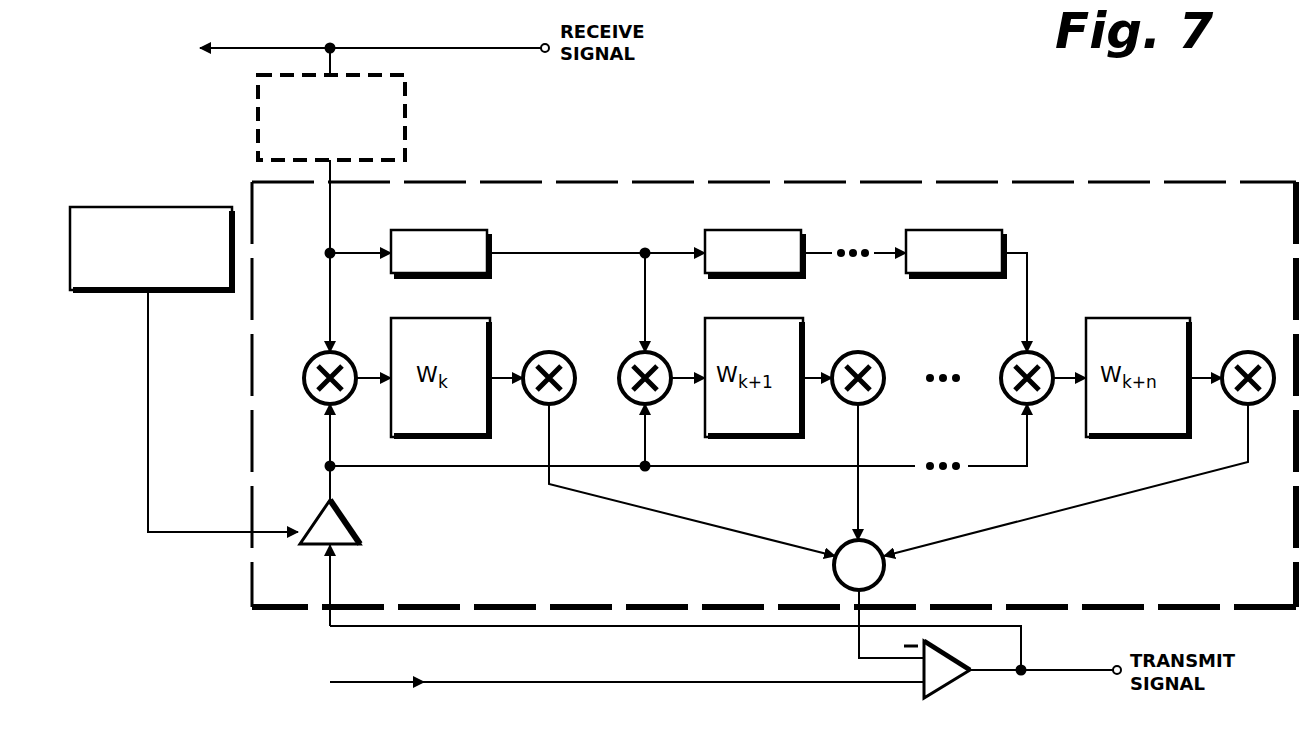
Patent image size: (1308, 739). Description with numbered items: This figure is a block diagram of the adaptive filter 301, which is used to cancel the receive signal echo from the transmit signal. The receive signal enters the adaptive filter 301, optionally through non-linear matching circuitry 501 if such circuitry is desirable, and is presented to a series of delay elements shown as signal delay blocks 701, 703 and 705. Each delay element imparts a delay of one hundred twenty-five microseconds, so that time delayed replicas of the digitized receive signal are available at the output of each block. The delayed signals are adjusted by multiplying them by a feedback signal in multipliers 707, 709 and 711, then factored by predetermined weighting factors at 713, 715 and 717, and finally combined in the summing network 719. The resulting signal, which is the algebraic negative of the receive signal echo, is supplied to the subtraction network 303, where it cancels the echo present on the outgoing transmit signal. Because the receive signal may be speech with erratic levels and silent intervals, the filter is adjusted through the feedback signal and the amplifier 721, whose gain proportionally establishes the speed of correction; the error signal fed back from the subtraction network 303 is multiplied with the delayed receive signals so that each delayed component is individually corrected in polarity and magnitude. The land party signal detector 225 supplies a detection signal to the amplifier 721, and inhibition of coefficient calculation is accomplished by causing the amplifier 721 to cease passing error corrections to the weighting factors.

The non-linear matching circuitry 501 is at (405, 92).
The land party signal detector 225 is at (160, 207).
The adaptive filter 301 is at (968, 182).
The signal delay block 701 is at (470, 230).
The signal delay block 703 is at (782, 230).
The signal delay block 705 is at (984, 230).
The multiplier 707 is at (312, 360).
The multiplier 709 is at (626, 360).
The multiplier 711 is at (1008, 360).
The weighting factor 713 is at (549, 352).
The weighting factor 715 is at (858, 352).
The weighting factor 717 is at (1248, 352).
The summing network 719 is at (838, 548).
The amplifier 721 is at (352, 532).
The subtraction network 303 is at (936, 700).